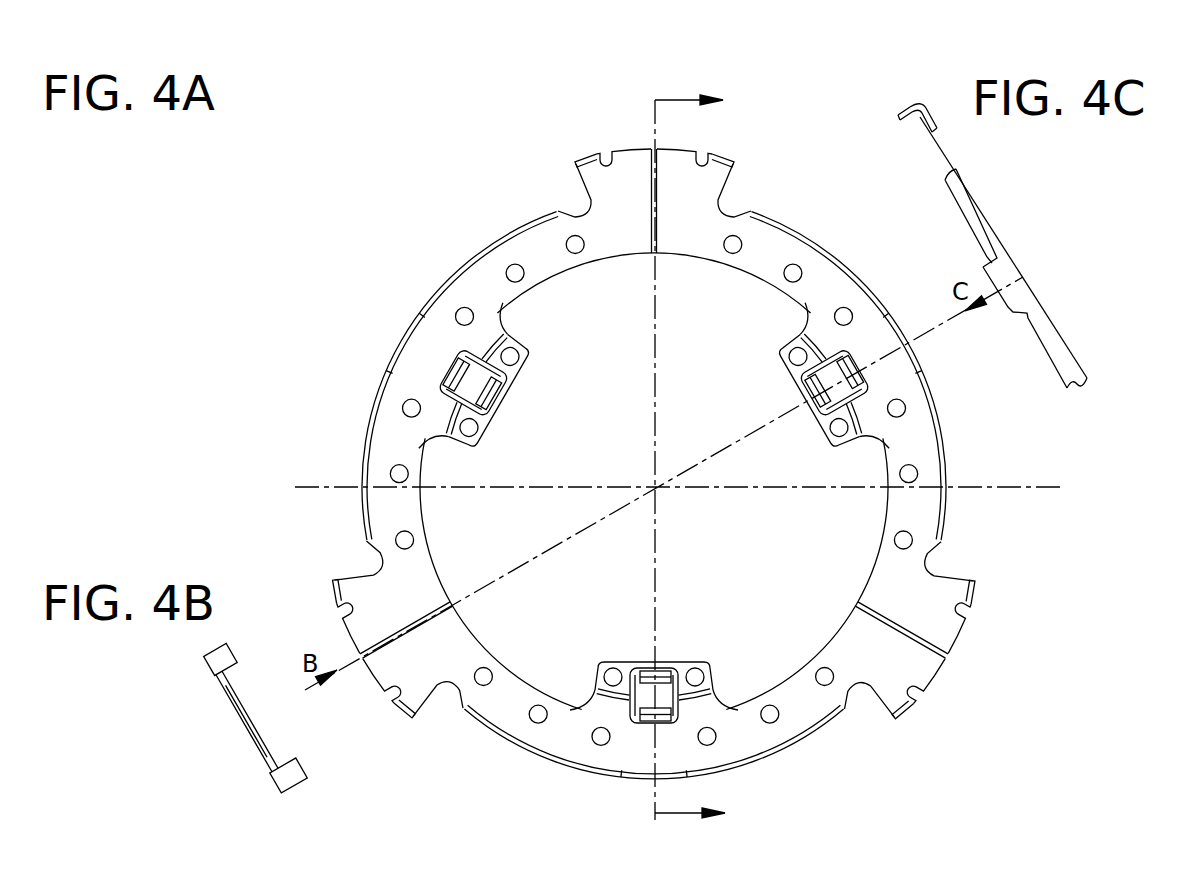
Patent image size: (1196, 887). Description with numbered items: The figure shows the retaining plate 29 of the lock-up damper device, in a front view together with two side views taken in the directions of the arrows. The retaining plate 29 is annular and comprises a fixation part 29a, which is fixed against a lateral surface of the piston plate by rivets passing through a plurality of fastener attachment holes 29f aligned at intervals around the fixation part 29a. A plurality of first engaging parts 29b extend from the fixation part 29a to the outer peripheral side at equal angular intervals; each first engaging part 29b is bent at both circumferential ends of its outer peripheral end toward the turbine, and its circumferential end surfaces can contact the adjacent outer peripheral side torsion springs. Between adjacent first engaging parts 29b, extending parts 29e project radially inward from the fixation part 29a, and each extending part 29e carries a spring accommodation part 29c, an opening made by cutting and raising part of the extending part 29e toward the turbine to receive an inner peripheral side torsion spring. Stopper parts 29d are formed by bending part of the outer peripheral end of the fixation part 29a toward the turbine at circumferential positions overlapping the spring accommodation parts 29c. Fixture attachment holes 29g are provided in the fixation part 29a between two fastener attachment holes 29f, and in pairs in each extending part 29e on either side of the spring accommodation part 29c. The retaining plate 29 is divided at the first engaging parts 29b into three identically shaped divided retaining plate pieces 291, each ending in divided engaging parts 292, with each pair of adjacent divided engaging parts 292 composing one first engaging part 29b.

In FIG. 4A, the retaining plate 29 is at (387, 193).
In FIG. 4A, the fixation part 29a is at (528, 258).
In FIG. 4A, the first engaging part 29b is at (648, 130).
In FIG. 4B, the first engaging part 29b is at (255, 717).
In FIG. 4A, the spring accommodation part 29c is at (512, 352).
In FIG. 4A, the stopper part 29d is at (396, 350).
In FIG. 4C, the stopper part 29d is at (992, 246).
In FIG. 4A, the extending part 29e is at (495, 425).
In FIG. 4A, the fastener attachment hole 29f is at (742, 250).
In FIG. 4A, the fixture attachment hole 29g is at (770, 350).
In FIG. 4A, the divided retaining plate piece 291 is at (391, 303).
In FIG. 4A, the divided engaging part 292 is at (585, 158).